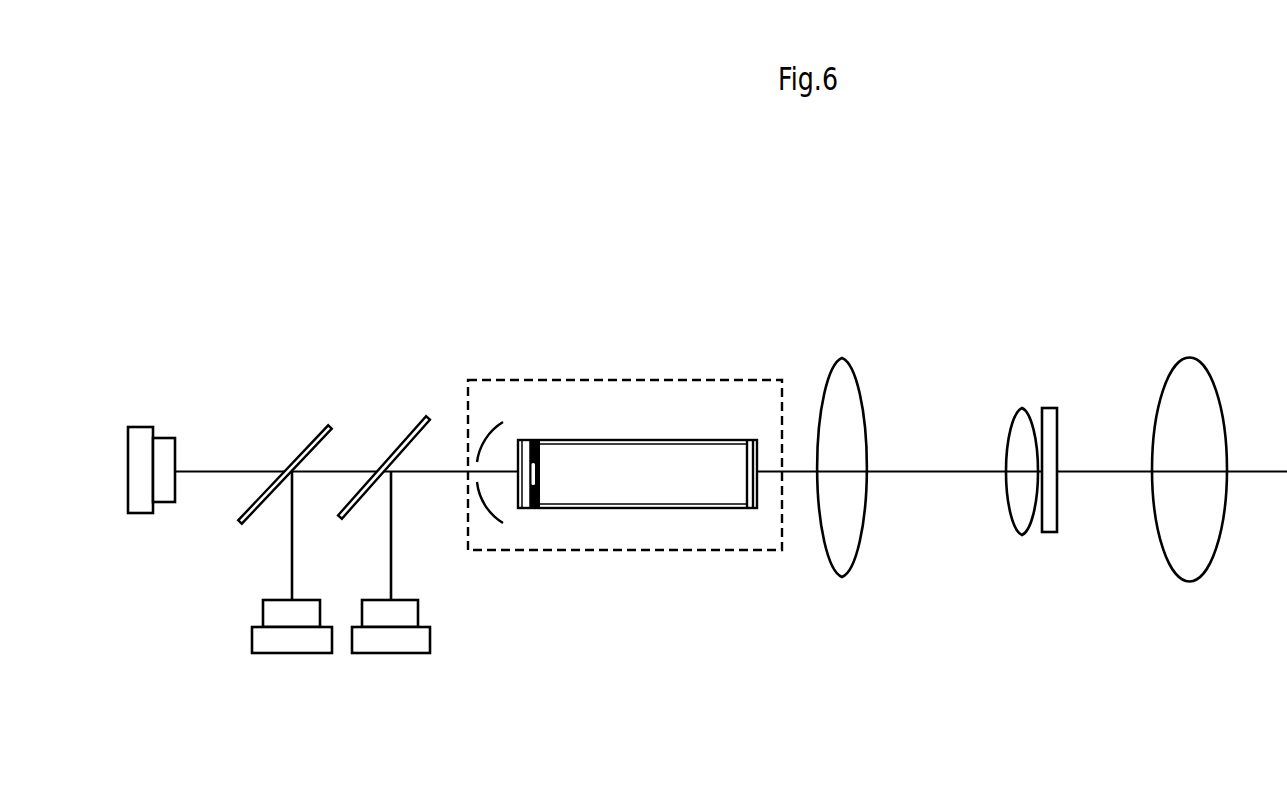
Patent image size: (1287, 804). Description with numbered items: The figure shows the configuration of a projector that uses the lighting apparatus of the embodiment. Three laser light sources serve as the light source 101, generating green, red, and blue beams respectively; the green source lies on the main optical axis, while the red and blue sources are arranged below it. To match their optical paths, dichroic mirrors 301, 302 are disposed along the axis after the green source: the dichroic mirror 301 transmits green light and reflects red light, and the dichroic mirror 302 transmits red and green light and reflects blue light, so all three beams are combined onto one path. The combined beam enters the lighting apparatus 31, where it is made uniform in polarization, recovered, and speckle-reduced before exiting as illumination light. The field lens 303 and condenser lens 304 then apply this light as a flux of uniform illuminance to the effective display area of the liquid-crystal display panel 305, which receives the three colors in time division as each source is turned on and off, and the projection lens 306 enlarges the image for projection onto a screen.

The light source 101 is at (274, 540).
The dichroic mirror 301 is at (327, 427).
The dichroic mirror 302 is at (420, 423).
The lighting apparatus 31 is at (690, 393).
The field lens 303 is at (837, 577).
The condenser lens 304 is at (1022, 408).
The liquid-crystal display panel 305 is at (1047, 532).
The projection lens 306 is at (1182, 577).